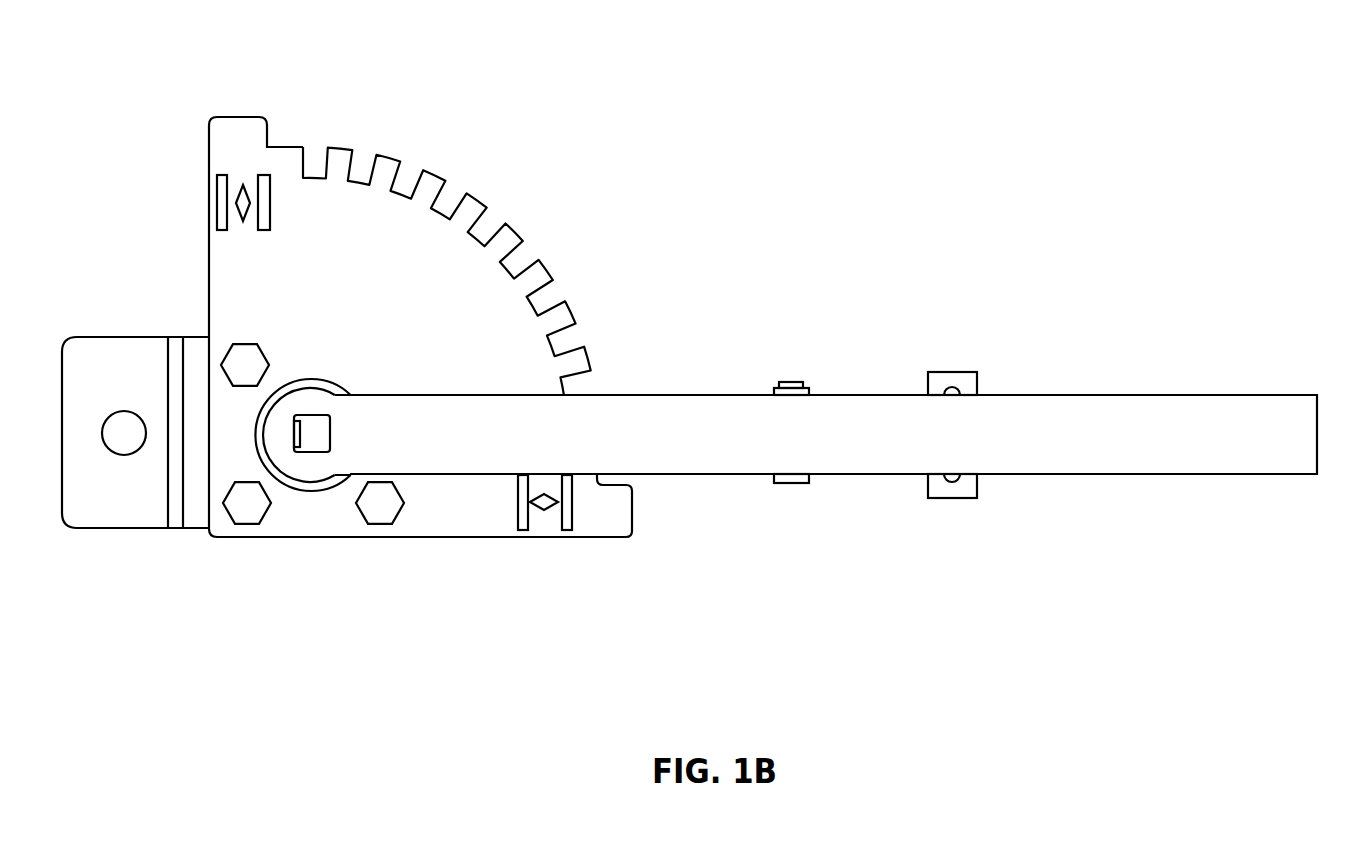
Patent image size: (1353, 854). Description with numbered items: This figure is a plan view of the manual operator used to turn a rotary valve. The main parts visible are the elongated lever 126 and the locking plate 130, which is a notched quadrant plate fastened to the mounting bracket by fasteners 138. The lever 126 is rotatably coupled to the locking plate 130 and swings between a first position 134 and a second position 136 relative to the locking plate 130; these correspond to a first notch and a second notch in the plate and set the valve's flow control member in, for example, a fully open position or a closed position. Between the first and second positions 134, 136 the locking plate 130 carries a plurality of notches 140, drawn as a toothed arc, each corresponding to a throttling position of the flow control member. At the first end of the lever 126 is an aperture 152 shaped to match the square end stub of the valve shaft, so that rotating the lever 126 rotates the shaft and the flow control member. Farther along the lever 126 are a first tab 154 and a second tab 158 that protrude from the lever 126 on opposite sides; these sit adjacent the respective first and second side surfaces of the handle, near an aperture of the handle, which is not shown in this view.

The lever arm 126 is at (745, 415).
The locking plate 130 is at (222, 276).
The first position 134 is at (632, 505).
The second position 136 is at (232, 115).
The fasteners 138 is at (245, 362).
The notches 140 is at (526, 178).
The aperture 152 is at (317, 427).
The first tab 154 is at (945, 498).
The second tab 158 is at (945, 372).